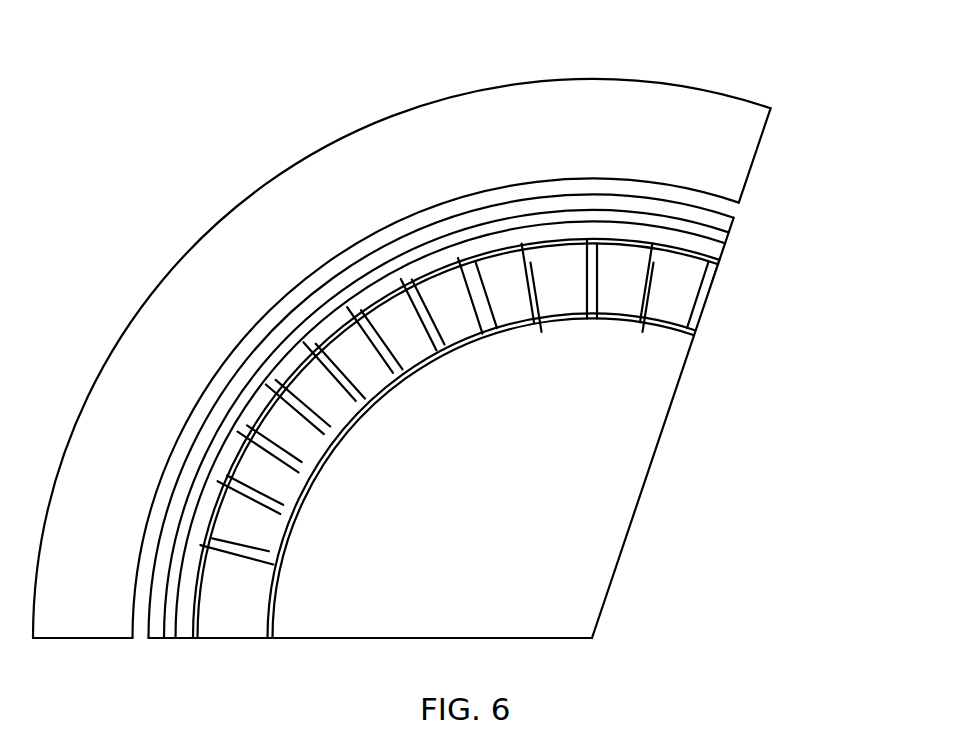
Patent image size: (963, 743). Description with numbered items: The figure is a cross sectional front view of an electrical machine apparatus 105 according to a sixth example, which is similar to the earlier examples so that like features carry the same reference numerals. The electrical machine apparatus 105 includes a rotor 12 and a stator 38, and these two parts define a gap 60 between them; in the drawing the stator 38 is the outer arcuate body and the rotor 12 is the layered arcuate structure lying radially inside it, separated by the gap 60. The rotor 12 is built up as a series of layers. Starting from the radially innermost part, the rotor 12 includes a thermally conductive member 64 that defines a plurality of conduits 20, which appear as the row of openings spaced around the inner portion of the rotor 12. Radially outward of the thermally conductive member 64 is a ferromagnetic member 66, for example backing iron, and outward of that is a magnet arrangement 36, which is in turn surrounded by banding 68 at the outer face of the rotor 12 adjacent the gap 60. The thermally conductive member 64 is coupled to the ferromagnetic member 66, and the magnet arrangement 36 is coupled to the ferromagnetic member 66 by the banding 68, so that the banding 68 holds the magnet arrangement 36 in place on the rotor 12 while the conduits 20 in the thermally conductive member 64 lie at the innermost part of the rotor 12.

The electrical machine apparatus 105 is at (471, 345).
The stator 38 is at (770, 144).
The gap 60 is at (750, 204).
The rotor 12 is at (536, 424).
The banding 68 is at (750, 232).
The magnet arrangement 36 is at (745, 248).
The ferromagnetic member 66 is at (740, 260).
The thermally conductive member 64 is at (737, 276).
The conduits 20 is at (848, 237).